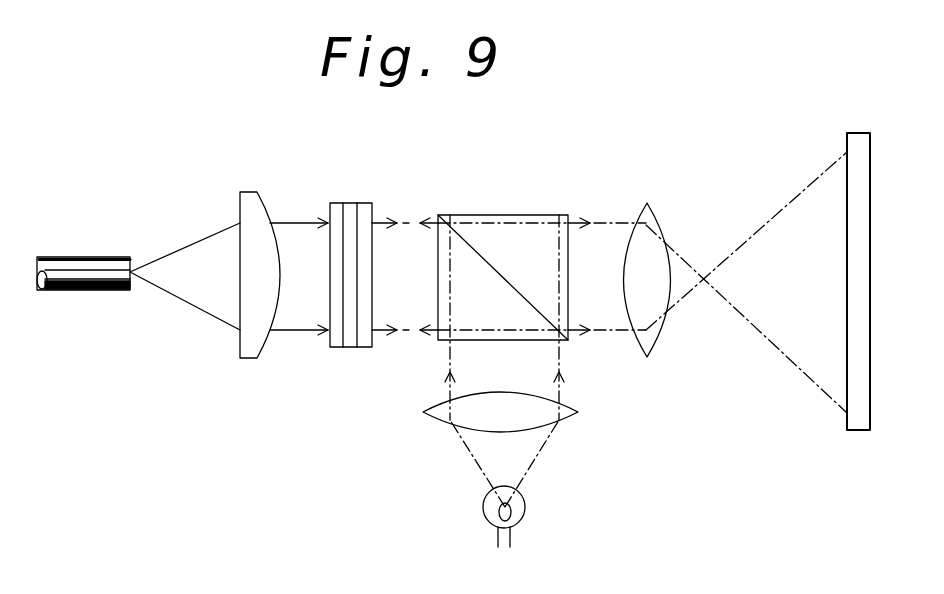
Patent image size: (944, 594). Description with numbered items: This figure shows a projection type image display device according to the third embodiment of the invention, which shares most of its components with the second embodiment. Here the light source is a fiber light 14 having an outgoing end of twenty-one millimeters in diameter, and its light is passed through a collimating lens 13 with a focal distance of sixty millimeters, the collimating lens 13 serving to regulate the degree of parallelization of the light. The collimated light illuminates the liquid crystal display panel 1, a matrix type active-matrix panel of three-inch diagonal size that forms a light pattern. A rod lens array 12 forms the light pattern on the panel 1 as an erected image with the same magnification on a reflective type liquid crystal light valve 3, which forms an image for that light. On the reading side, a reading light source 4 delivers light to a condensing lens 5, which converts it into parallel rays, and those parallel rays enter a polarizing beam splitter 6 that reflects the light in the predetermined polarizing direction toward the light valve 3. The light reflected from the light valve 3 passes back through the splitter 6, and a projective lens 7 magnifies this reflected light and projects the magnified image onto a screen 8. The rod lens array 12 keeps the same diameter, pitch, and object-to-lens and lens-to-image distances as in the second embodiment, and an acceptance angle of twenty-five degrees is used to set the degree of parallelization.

The liquid crystal display panel 1 is at (333, 203).
The reflective type liquid crystal light valve 3 is at (368, 203).
The reading light source 4 is at (526, 507).
The condensing lens 5 is at (571, 400).
The polarizing beam splitter 6 is at (505, 214).
The projective lens 7 is at (645, 210).
The screen 8 is at (855, 132).
The rod lens array 12 is at (350, 203).
The collimating lens 13 is at (247, 190).
The fiber light 14 is at (84, 256).